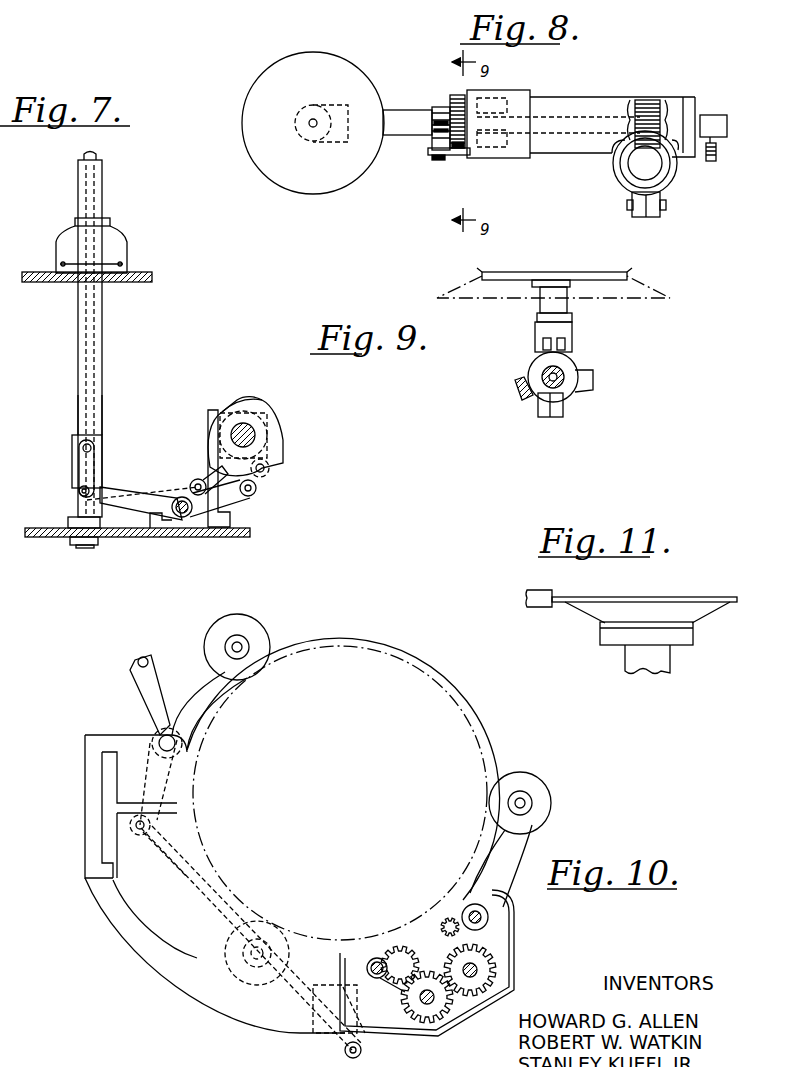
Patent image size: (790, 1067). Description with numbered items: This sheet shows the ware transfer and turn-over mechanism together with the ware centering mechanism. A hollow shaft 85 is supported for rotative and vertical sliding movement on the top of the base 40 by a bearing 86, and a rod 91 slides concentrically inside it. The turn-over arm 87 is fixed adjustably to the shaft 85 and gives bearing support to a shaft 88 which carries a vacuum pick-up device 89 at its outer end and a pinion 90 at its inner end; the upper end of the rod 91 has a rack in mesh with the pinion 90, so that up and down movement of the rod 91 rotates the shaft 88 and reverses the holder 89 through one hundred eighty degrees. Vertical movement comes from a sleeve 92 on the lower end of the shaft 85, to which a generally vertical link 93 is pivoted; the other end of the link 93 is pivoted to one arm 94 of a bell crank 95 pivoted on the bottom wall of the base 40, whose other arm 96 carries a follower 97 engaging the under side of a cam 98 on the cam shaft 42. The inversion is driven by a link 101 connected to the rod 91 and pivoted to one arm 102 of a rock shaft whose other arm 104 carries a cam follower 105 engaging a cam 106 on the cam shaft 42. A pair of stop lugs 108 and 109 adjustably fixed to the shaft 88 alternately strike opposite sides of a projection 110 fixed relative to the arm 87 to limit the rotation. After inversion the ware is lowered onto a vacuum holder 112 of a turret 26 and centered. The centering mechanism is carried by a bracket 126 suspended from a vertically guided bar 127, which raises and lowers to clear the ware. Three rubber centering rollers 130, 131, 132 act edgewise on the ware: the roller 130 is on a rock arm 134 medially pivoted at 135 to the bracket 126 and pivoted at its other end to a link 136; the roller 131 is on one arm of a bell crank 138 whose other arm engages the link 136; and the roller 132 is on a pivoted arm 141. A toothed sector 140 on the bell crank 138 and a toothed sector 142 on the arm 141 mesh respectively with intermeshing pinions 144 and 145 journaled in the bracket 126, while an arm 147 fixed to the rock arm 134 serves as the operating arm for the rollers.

In FIG. 11, the turret 26 is at (663, 662).
In FIG. 7, the base 40 is at (145, 272).
In FIG. 7, the cam shaft 42 is at (240, 428).
In FIG. 7, the shaft 85 is at (101, 186).
In FIG. 8, the shaft 85 is at (672, 170).
In FIG. 7, the bearing 86 is at (118, 233).
In FIG. 8, the turn-over arm 87 is at (565, 106).
In FIG. 8, the shaft 88 is at (400, 110).
In FIG. 9, the shaft 88 is at (545, 372).
In FIG. 8, the vacuum pick-up device 89 is at (313, 194).
In FIG. 9, the vacuum pick-up device 89 is at (605, 290).
In FIG. 8, the pinion 90 is at (647, 100).
In FIG. 7, the rod 91 is at (86, 157).
In FIG. 8, the rod 91 is at (630, 163).
In FIG. 7, the sleeve 92 is at (103, 441).
In FIG. 7, the link 93 is at (79, 465).
In FIG. 7, the arm 94 is at (125, 489).
In FIG. 7, the bell crank 95 is at (182, 520).
In FIG. 7, the arm 96 is at (233, 503).
In FIG. 7, the follower 97 is at (256, 490).
In FIG. 7, the cam 98 is at (284, 437).
In FIG. 7, the link 101 is at (78, 425).
In FIG. 7, the arm 102 is at (183, 492).
In FIG. 7, the arm 104 is at (220, 473).
In FIG. 7, the cam follower 105 is at (270, 468).
In FIG. 7, the cam 106 is at (257, 400).
In FIG. 8, the stop lug 108 is at (441, 156).
In FIG. 9, the stop lug 108 is at (534, 403).
In FIG. 8, the stop lug 109 is at (452, 100).
In FIG. 9, the stop lug 109 is at (592, 376).
In FIG. 8, the projection 110 is at (462, 152).
In FIG. 9, the projection 110 is at (512, 398).
In FIG. 11, the vacuum holder 112 is at (600, 636).
In FIG. 10, the bracket 126 is at (197, 983).
In FIG. 10, the bar 127 is at (85, 800).
In FIG. 11, the centering roller 130 is at (555, 596).
In FIG. 10, the centering roller 130 is at (262, 632).
In FIG. 10, the centering roller 131 is at (270, 988).
In FIG. 10, the centering roller 132 is at (520, 772).
In FIG. 10, the rock arm 134 is at (193, 672).
In FIG. 10, the pivot 135 is at (160, 737).
In FIG. 10, the link 136 is at (184, 880).
In FIG. 10, the bell crank 138 is at (345, 1050).
In FIG. 10, the toothed sector 140 is at (400, 946).
In FIG. 10, the pivoted arm 141 is at (497, 850).
In FIG. 10, the toothed sector 142 is at (452, 913).
In FIG. 10, the pinion 144 is at (425, 1024).
In FIG. 10, the pinion 145 is at (498, 963).
In FIG. 10, the arm 147 is at (138, 662).